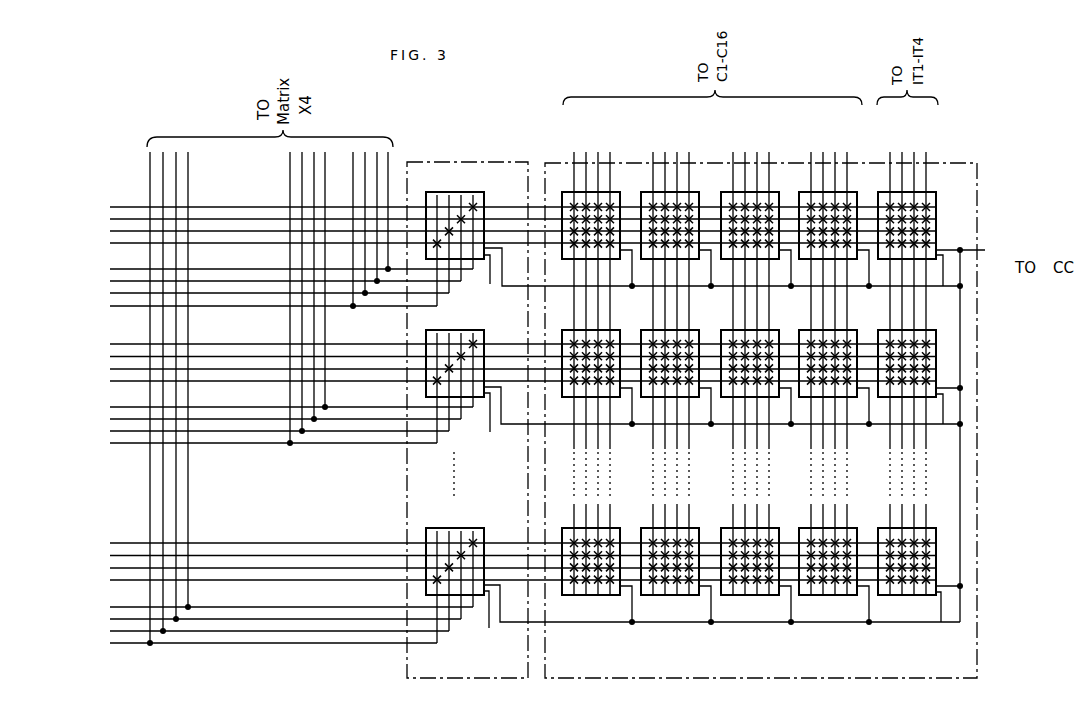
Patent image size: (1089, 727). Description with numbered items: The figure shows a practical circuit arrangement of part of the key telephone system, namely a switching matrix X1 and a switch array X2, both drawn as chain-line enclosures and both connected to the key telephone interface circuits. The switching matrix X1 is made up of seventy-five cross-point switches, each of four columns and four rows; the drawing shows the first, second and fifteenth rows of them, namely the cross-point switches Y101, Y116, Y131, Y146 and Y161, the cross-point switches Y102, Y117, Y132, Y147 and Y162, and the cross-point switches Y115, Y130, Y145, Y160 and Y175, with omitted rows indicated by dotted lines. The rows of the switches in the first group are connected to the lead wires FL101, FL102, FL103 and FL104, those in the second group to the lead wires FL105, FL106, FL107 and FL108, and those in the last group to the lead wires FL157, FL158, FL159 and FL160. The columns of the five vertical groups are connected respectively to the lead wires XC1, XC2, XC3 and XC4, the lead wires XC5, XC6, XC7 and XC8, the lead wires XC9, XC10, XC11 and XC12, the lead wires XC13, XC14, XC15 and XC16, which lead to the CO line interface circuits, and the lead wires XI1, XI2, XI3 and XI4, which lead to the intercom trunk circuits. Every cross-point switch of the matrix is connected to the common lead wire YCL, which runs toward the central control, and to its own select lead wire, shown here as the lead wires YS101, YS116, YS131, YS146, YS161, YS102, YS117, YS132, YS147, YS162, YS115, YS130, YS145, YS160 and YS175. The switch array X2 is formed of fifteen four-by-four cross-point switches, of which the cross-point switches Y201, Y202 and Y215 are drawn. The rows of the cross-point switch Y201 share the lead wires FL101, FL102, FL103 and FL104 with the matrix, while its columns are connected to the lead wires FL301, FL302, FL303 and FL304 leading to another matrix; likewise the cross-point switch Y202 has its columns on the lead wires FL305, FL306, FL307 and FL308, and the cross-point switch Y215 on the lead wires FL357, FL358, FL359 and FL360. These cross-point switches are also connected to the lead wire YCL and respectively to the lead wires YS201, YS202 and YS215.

The switching matrix X1 is at (761, 421).
The switch array X2 is at (467, 420).
The cross-point switch Y201 is at (467, 238).
The cross-point switch Y202 is at (464, 377).
The cross-point switch Y215 is at (461, 576).
The lead wire YS201 is at (720, 277).
The lead wire YS202 is at (718, 418).
The lead wire YS215 is at (719, 619).
The cross-point switch Y101 is at (604, 215).
The cross-point switch Y116 is at (683, 215).
The cross-point switch Y131 is at (763, 215).
The cross-point switch Y146 is at (841, 215).
The cross-point switch Y161 is at (920, 215).
The cross-point switch Y102 is at (604, 354).
The cross-point switch Y117 is at (683, 354).
The cross-point switch Y132 is at (763, 354).
The cross-point switch Y147 is at (841, 354).
The cross-point switch Y162 is at (920, 354).
The cross-point switch Y115 is at (603, 552).
The cross-point switch Y130 is at (682, 552).
The cross-point switch Y145 is at (762, 552).
The cross-point switch Y160 is at (840, 552).
The cross-point switch Y175 is at (919, 552).
The lead wire YS101 is at (632, 280).
The lead wire YS116 is at (711, 280).
The lead wire YS131 is at (791, 280).
The lead wire YS146 is at (869, 280).
The lead wire YS161 is at (948, 283).
The lead wire YS102 is at (632, 419).
The lead wire YS117 is at (711, 419).
The lead wire YS132 is at (791, 419).
The lead wire YS147 is at (869, 419).
The lead wire YS162 is at (948, 419).
The lead wire YS115 is at (628, 618).
The lead wire YS130 is at (709, 618).
The lead wire YS145 is at (789, 618).
The lead wire YS160 is at (867, 618).
The lead wire YS175 is at (946, 618).
The lead wire YCL is at (978, 432).
The lead wire FL101 is at (498, 206).
The lead wire FL102 is at (498, 221).
The lead wire FL103 is at (498, 237).
The lead wire FL104 is at (498, 252).
The lead wire FL105 is at (498, 344).
The lead wire FL106 is at (498, 358).
The lead wire FL107 is at (498, 372).
The lead wire FL108 is at (498, 385).
The lead wire FL157 is at (498, 542).
The lead wire FL158 is at (498, 555).
The lead wire FL159 is at (498, 569).
The lead wire FL160 is at (498, 583).
The lead wire FL301 is at (266, 215).
The lead wire FL302 is at (260, 222).
The lead wire FL303 is at (254, 230).
The lead wire FL304 is at (248, 237).
The lead wire FL305 is at (266, 284).
The lead wire FL306 is at (260, 291).
The lead wire FL307 is at (254, 298).
The lead wire FL308 is at (248, 304).
The lead wire FL357 is at (266, 384).
The lead wire FL358 is at (260, 391).
The lead wire FL359 is at (254, 398).
The lead wire FL360 is at (248, 404).
The lead wire XC1 is at (572, 354).
The lead wire XC2 is at (584, 354).
The lead wire XC3 is at (596, 354).
The lead wire XC4 is at (608, 354).
The lead wire XC5 is at (651, 354).
The lead wire XC6 is at (663, 354).
The lead wire XC7 is at (675, 354).
The lead wire XC8 is at (687, 354).
The lead wire XC9 is at (731, 354).
The lead wire XC10 is at (743, 349).
The lead wire XC11 is at (755, 349).
The lead wire XC12 is at (767, 349).
The lead wire XC13 is at (809, 349).
The lead wire XC14 is at (821, 349).
The lead wire XC15 is at (833, 349).
The lead wire XC16 is at (845, 349).
The lead wire XI1 is at (888, 353).
The lead wire XI2 is at (900, 353).
The lead wire XI3 is at (912, 353).
The lead wire XI4 is at (924, 353).